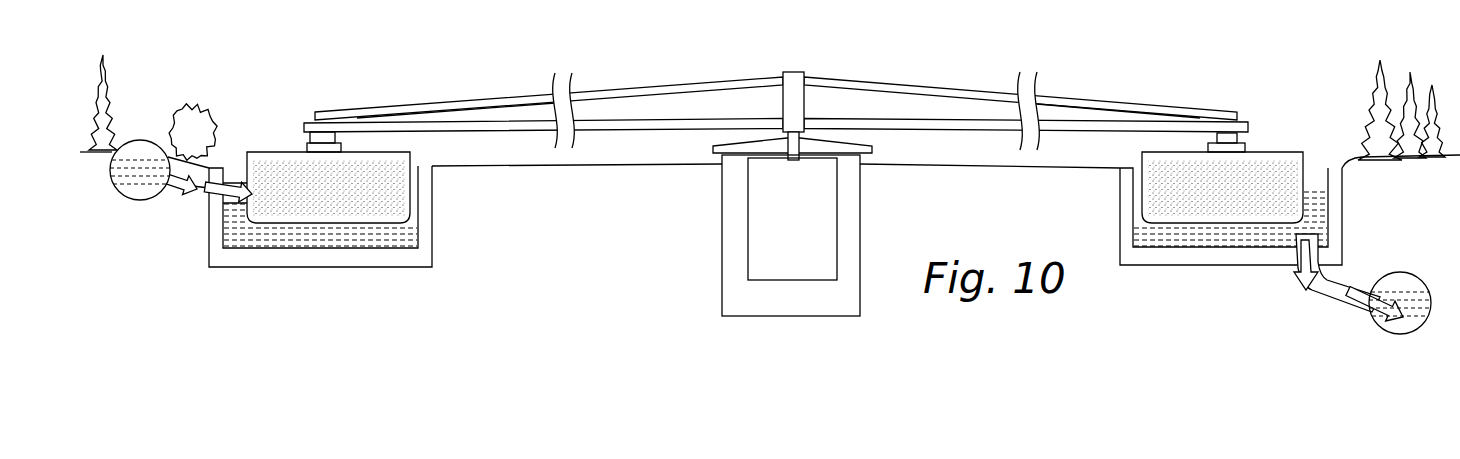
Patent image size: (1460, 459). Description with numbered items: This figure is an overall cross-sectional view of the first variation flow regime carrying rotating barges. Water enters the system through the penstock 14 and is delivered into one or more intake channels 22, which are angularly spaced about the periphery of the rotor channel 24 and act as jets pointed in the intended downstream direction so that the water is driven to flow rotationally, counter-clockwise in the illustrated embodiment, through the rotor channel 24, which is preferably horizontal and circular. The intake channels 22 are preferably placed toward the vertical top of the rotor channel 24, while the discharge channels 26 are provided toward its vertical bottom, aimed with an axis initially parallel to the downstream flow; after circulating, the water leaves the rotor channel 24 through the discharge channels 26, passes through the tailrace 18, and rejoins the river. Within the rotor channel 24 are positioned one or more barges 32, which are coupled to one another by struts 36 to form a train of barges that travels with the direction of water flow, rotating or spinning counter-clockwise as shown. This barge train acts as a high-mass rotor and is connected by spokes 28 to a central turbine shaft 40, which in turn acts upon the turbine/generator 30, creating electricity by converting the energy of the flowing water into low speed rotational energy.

The penstock 14 is at (157, 137).
The tailrace 18 is at (1392, 273).
The intake channel 22 is at (195, 203).
The rotor channel 24 is at (267, 267).
The discharge channel 26 is at (1340, 303).
The spoke 28 is at (478, 99).
The turbine/generator 30 is at (748, 248).
The barge 32 is at (280, 152).
The strut 36 is at (662, 119).
The central turbine shaft 40 is at (787, 147).